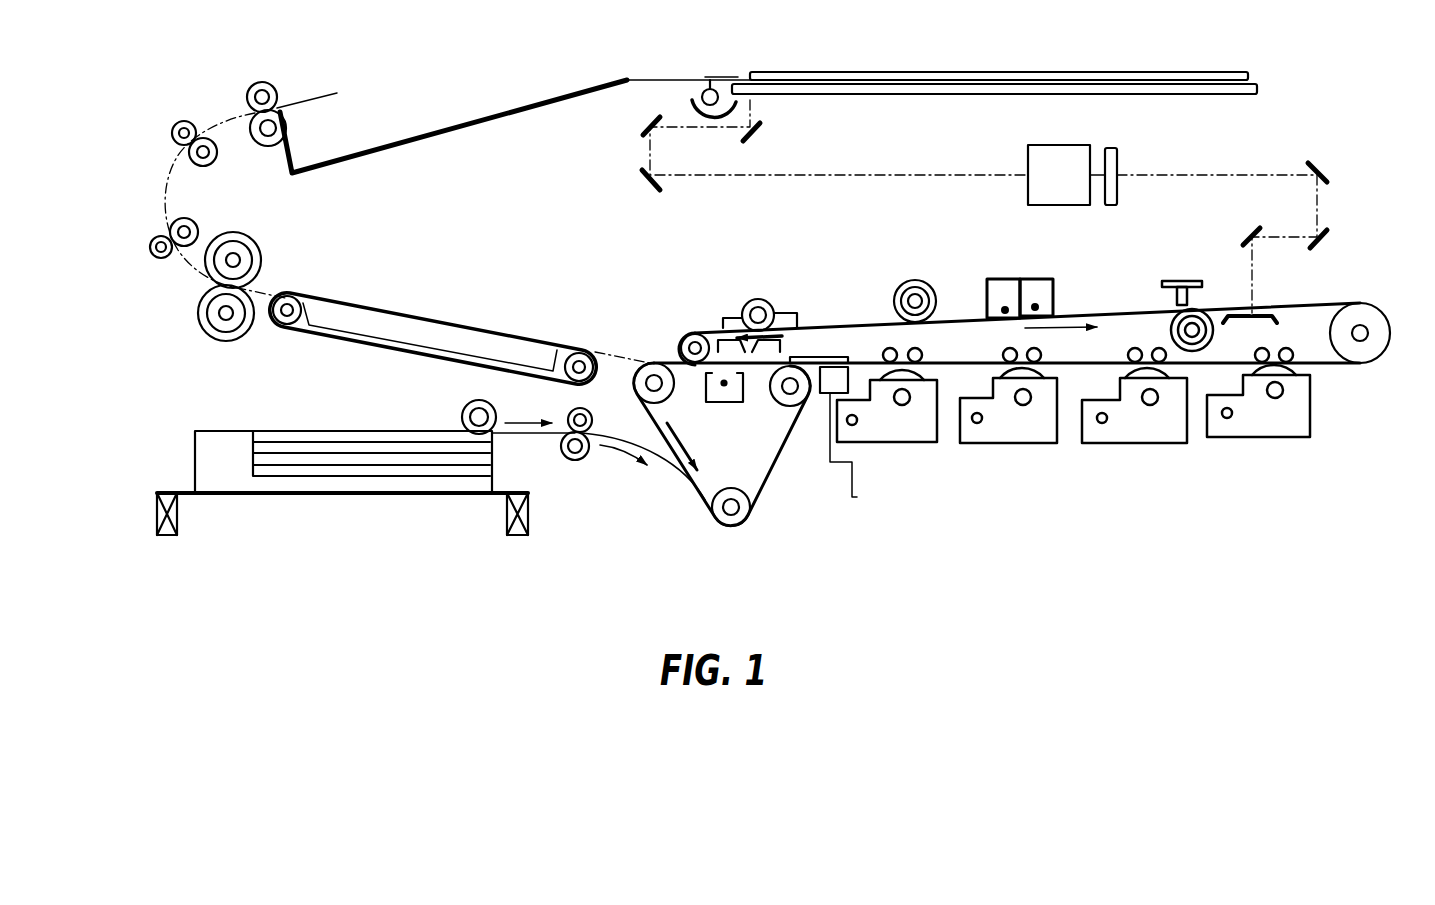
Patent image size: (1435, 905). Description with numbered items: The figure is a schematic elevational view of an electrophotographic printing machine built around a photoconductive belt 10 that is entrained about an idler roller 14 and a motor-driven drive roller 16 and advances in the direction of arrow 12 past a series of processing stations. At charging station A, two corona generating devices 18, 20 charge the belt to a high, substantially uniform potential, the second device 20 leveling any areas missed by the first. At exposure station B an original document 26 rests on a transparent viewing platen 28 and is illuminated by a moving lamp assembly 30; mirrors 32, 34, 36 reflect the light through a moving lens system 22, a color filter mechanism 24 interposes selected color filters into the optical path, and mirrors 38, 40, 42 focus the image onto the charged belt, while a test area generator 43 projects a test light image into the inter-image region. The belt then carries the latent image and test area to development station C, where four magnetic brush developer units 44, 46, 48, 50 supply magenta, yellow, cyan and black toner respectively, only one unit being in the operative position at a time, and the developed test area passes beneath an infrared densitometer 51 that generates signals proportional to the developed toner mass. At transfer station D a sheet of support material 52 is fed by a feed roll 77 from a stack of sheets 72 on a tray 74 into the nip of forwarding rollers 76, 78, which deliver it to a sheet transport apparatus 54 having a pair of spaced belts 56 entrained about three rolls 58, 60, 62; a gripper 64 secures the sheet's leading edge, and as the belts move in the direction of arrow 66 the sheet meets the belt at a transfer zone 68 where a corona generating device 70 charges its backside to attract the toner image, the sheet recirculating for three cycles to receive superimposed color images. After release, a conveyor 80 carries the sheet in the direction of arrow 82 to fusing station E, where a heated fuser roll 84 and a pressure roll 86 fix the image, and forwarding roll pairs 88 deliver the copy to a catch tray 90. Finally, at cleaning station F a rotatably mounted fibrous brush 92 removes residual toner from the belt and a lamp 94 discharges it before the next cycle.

The photoconductive belt 10 is at (852, 282).
The arrow 12 is at (1060, 328).
The idler roller 14 is at (677, 342).
The drive roller 16 is at (1372, 350).
The corona generating device 18 is at (973, 268).
The corona generating device 20 is at (1075, 295).
The moving lens system 22 is at (1030, 155).
The color filter mechanism 24 is at (1117, 160).
The original document 26 is at (1183, 72).
The transparent viewing platen 28 is at (1257, 93).
The moving lamp assembly 30 is at (710, 89).
The mirror 32 is at (760, 130).
The mirror 34 is at (643, 130).
The mirror 36 is at (643, 192).
The mirror 38 is at (1313, 167).
The mirror 40 is at (1325, 232).
The mirror 42 is at (1250, 233).
The test area generator 43 is at (1170, 280).
The developer unit 44 is at (1215, 455).
The developer unit 46 is at (1165, 445).
The developer unit 48 is at (1030, 450).
The developer unit 50 is at (907, 460).
The infrared densitometer 51 is at (812, 412).
The sheet of support material 52 is at (620, 440).
The sheet transport apparatus 54 is at (780, 512).
The belts 56 is at (780, 452).
The roll 58 is at (747, 522).
The roll 60 is at (800, 378).
The roll 62 is at (655, 366).
The gripper 64 is at (693, 495).
The arrow 66 is at (672, 462).
The transfer zone 68 is at (723, 323).
The corona generating device 70 is at (725, 400).
The stack of sheets 72 is at (302, 433).
The tray 74 is at (377, 497).
The forwarding roller 76 is at (575, 413).
The feed roll 77 is at (458, 412).
The forwarding roller 78 is at (572, 457).
The conveyor 80 is at (455, 323).
The arrow 82 is at (333, 293).
The heated fuser roll 84 is at (252, 241).
The pressure roll 86 is at (207, 333).
The forwarding roll pairs 88 is at (277, 107).
The catch tray 90 is at (490, 115).
The fibrous brush 92 is at (758, 315).
The lamp 94 is at (910, 282).
The charging station A is at (1013, 258).
The exposure station B is at (1272, 295).
The development station C is at (983, 542).
The transfer station D is at (708, 537).
The fusing station E is at (188, 293).
The cleaning station F is at (773, 272).